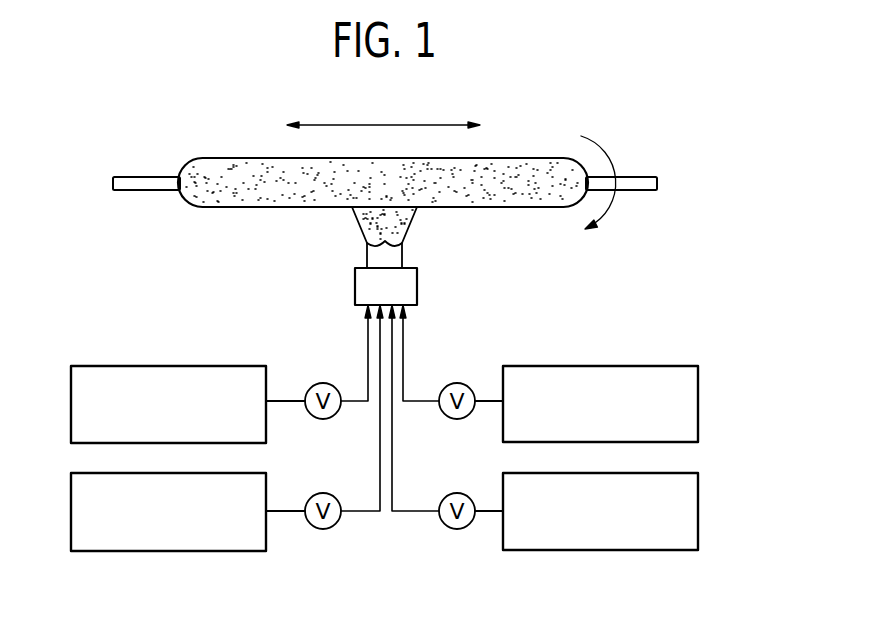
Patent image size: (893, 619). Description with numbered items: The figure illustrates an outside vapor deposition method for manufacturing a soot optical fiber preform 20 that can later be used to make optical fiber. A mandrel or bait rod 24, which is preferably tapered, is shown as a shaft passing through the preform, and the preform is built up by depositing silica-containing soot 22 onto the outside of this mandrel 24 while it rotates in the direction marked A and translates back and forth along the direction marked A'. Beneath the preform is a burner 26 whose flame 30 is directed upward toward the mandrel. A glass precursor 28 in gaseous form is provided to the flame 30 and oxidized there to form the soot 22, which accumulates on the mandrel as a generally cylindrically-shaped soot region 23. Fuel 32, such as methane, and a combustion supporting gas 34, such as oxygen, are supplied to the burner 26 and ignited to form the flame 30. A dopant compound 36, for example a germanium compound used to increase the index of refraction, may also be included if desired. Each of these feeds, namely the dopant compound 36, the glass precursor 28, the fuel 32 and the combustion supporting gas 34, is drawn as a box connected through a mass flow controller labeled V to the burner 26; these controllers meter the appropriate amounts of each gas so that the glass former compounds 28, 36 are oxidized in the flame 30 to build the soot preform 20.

The soot optical fiber preform 20 is at (508, 158).
The silica-containing soot 22 is at (410, 218).
The soot region 23 is at (226, 157).
The mandrel or bait rod 24 is at (143, 177).
The burner 26 is at (418, 285).
The glass precursor 28 is at (675, 365).
The flame 30 is at (366, 255).
The fuel 32 is at (86, 365).
The combustion supporting gas 34 is at (86, 473).
The dopant compound 36 is at (675, 473).
The rotation direction A is at (607, 169).
The translation direction A' is at (383, 107).